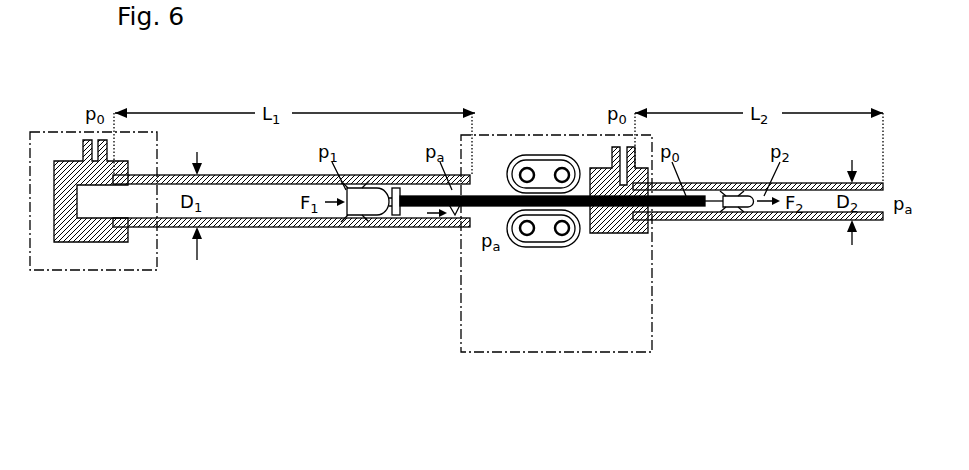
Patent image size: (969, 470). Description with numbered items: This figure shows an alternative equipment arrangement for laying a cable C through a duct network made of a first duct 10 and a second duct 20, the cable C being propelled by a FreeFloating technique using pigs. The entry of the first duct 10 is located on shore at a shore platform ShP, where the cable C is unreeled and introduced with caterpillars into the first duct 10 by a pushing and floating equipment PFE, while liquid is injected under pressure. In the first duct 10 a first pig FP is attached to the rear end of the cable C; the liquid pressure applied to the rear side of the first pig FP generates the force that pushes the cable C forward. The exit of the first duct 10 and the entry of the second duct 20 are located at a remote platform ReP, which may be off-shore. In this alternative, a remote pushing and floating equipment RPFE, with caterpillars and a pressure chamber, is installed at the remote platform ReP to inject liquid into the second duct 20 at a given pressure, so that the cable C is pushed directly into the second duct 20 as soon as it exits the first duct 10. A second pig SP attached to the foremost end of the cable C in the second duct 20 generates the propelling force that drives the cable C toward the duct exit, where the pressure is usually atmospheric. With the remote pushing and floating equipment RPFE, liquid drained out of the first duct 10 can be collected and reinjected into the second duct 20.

The first duct 10 is at (246, 227).
The second duct 20 is at (877, 220).
The pushing and floating equipment PFE is at (108, 242).
The shore platform ShP is at (97, 270).
The first pig FP is at (376, 216).
The remote pushing and floating equipment RPFE is at (647, 253).
The remote platform ReP is at (550, 352).
The cable C is at (660, 205).
The second pig SP is at (752, 220).